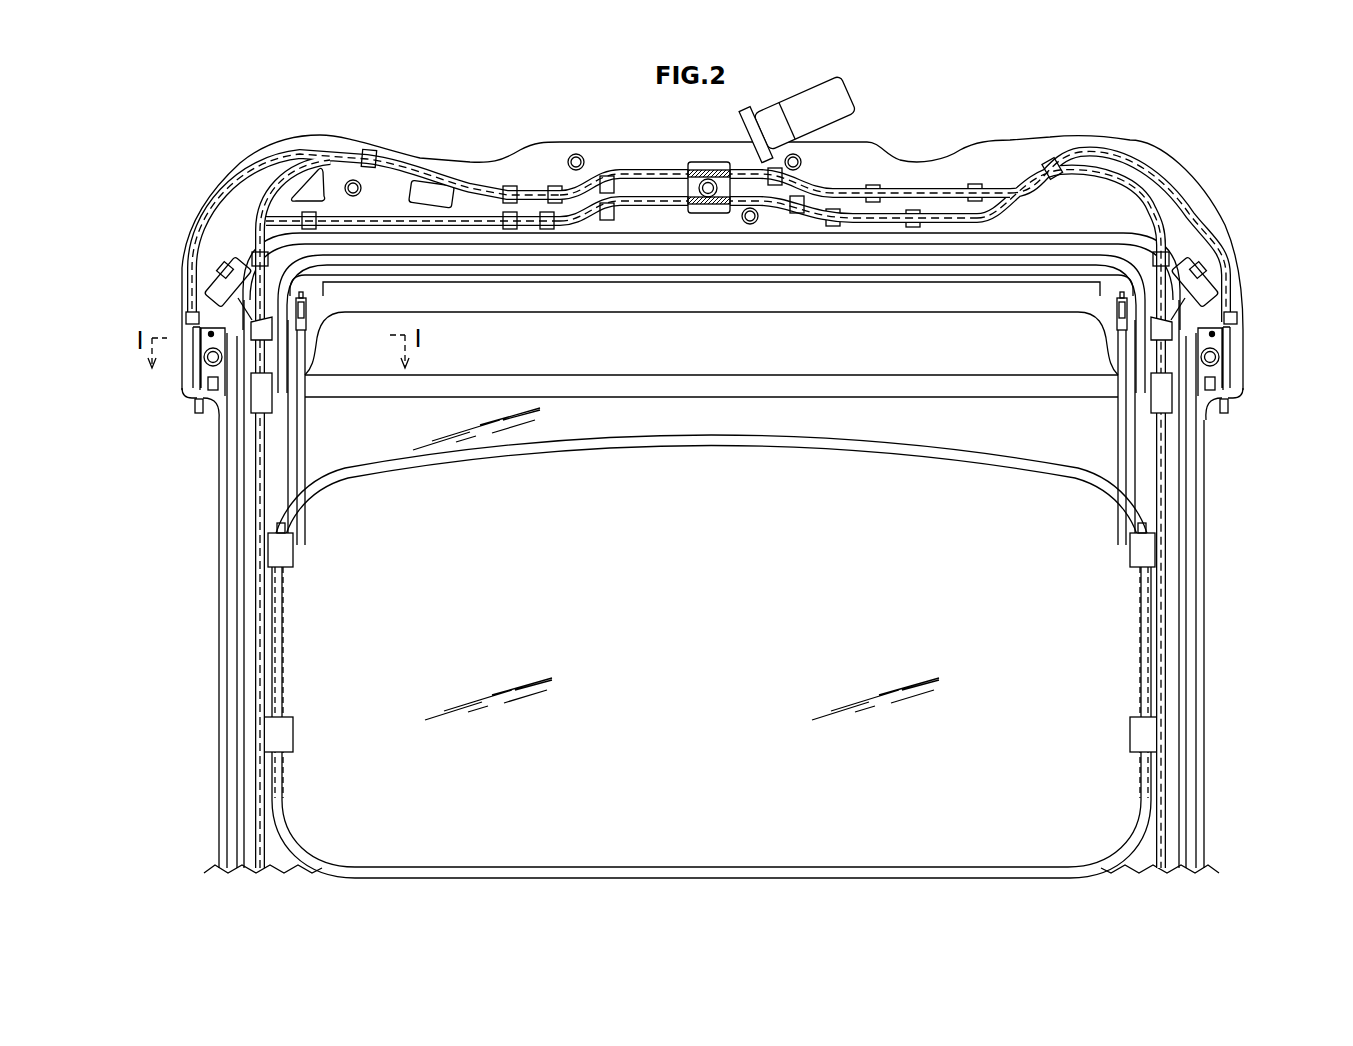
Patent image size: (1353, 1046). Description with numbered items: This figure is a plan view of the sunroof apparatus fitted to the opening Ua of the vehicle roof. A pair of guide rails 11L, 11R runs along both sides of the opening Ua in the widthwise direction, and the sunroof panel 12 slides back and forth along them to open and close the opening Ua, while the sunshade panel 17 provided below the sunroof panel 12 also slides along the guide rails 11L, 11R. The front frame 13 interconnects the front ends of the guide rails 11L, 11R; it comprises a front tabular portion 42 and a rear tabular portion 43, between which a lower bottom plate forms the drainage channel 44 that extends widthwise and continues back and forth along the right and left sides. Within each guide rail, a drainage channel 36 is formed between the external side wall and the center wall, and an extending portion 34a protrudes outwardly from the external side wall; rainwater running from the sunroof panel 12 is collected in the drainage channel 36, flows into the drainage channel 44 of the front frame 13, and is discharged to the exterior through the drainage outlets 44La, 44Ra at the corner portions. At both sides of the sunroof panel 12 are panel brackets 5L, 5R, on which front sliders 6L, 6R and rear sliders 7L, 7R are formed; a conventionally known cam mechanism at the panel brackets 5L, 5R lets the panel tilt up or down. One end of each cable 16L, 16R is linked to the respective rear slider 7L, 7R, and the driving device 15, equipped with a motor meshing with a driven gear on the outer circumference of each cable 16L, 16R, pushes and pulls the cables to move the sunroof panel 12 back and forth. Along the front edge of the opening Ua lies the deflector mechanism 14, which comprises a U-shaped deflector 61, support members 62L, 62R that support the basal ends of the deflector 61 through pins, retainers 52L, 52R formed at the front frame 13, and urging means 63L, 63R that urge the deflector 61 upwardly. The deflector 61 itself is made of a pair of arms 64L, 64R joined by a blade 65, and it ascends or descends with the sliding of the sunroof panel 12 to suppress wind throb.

The panel bracket 5L is at (290, 645).
The panel bracket 5R is at (1133, 645).
The front slider 6L is at (295, 553).
The front slider 6R is at (1128, 553).
The rear slider 7L is at (295, 738).
The rear slider 7R is at (1128, 738).
The guide rail 11L is at (308, 434).
The guide rail 11R is at (1115, 434).
The sunroof panel 12 is at (700, 675).
The front frame 13 is at (512, 155).
The deflector mechanism 14 is at (333, 247).
The driving device 15 is at (843, 92).
The cable 16L is at (285, 162).
The cable 16R is at (1163, 190).
The sunshade panel 17 is at (699, 430).
The extending portion 34a is at (197, 405).
The drainage channel 36 is at (245, 583).
The front tabular portion 42 is at (663, 157).
The rear tabular portion 43 is at (492, 298).
The drainage channel 44 is at (465, 250).
The drainage outlet 44La is at (215, 265).
The drainage outlet 44Ra is at (1210, 265).
The retainer 52L is at (318, 348).
The retainer 52R is at (1105, 348).
The deflector 61 is at (688, 280).
The support member 62L is at (252, 406).
The support member 62R is at (1172, 406).
The urging means 63L is at (307, 301).
The urging means 63R is at (1116, 301).
The arm 64L is at (262, 323).
The arm 64R is at (1162, 323).
The blade 65 is at (787, 282).
The opening Ua is at (882, 322).